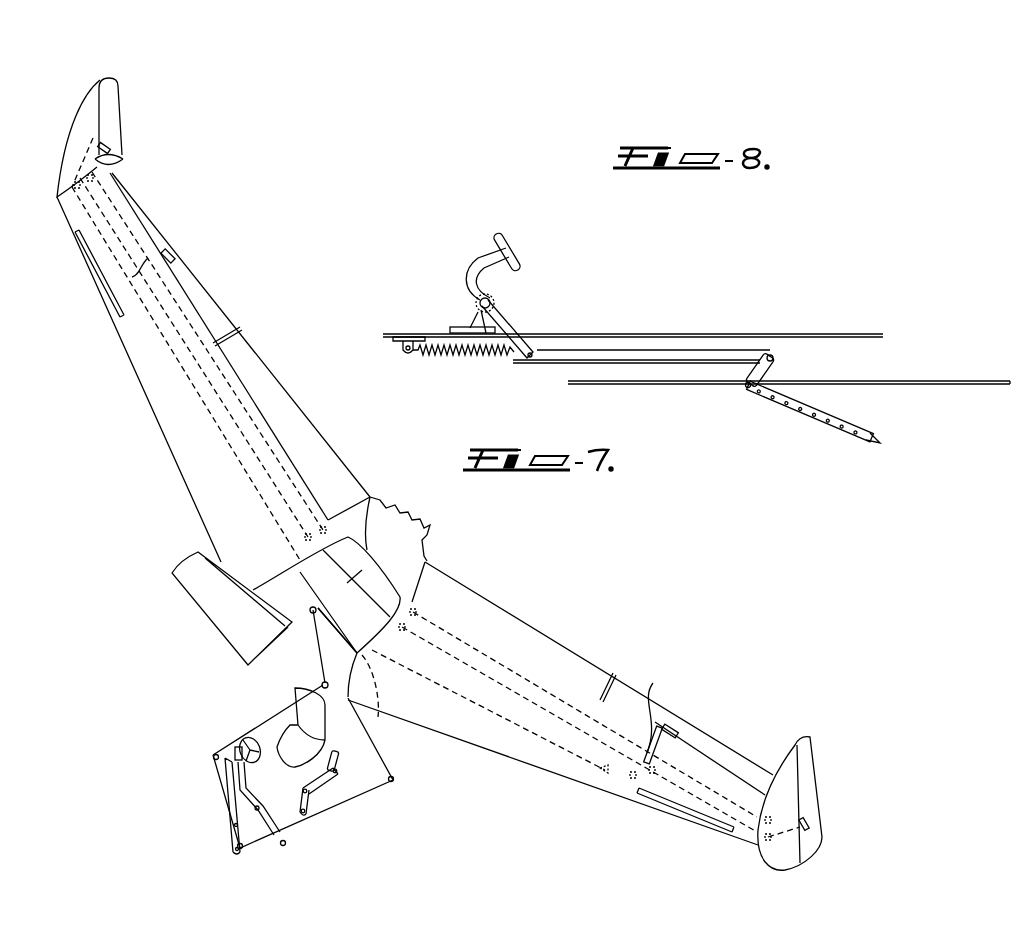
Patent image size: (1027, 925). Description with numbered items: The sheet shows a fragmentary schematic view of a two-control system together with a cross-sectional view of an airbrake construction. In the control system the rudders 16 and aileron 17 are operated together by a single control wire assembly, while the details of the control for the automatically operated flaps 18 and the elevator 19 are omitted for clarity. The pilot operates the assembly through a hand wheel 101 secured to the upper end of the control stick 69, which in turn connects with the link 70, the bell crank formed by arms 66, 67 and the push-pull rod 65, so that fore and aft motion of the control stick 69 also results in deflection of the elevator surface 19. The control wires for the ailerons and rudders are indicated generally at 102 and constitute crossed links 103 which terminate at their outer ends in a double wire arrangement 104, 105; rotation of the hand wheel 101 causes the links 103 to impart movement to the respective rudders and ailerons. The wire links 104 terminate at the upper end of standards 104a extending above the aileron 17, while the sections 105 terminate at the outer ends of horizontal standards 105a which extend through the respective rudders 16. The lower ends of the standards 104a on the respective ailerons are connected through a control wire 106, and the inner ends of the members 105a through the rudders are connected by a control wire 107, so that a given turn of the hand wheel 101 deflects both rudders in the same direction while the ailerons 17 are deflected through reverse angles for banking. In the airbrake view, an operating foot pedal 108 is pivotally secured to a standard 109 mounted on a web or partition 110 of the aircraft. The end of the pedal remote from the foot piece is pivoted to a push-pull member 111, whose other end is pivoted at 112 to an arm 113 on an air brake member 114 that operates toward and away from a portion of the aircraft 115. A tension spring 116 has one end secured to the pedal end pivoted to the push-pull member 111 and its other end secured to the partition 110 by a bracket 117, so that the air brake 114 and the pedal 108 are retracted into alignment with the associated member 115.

In FIG. 7, the rudder 16 is at (106, 104).
In FIG. 7, the aileron 17 is at (150, 205).
In FIG. 7, the automatically operated flap 18 is at (297, 417).
In FIG. 7, the elevator surface 19 is at (233, 580).
In FIG. 7, the push-pull rod 65 is at (340, 760).
In FIG. 7, the bell crank arm 66 is at (316, 786).
In FIG. 7, the bell crank arm 67 is at (300, 795).
In FIG. 7, the control stick 69 is at (230, 803).
In FIG. 7, the push-pull rod 70 is at (258, 843).
In FIG. 7, the hand wheel 101 is at (248, 745).
In FIG. 7, the control wires 102 is at (312, 659).
In FIG. 7, the crossed links 103 is at (213, 425).
In FIG. 7, the wire link 104 is at (148, 258).
In FIG. 7, the standard 104a is at (175, 265).
In FIG. 7, the wire section 105 is at (112, 260).
In FIG. 7, the horizontal standard 105a is at (100, 146).
In FIG. 7, the control wire 106 is at (160, 262).
In FIG. 7, the control wire 107 is at (97, 165).
In FIG. 8, the foot pedal 108 is at (512, 253).
In FIG. 8, the standard 109 is at (475, 320).
In FIG. 8, the web or partition 110 is at (576, 335).
In FIG. 8, the push-pull member 111 is at (555, 364).
In FIG. 8, the pivot 112 is at (775, 357).
In FIG. 8, the arm 113 is at (760, 372).
In FIG. 8, the air brake member 114 is at (827, 422).
In FIG. 8, the portion of the aircraft 115 is at (930, 380).
In FIG. 8, the tension spring 116 is at (452, 357).
In FIG. 8, the bracket 117 is at (397, 343).